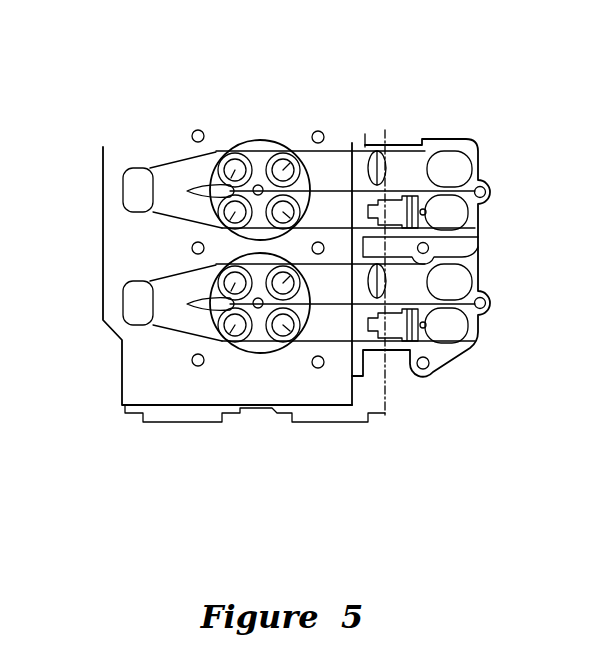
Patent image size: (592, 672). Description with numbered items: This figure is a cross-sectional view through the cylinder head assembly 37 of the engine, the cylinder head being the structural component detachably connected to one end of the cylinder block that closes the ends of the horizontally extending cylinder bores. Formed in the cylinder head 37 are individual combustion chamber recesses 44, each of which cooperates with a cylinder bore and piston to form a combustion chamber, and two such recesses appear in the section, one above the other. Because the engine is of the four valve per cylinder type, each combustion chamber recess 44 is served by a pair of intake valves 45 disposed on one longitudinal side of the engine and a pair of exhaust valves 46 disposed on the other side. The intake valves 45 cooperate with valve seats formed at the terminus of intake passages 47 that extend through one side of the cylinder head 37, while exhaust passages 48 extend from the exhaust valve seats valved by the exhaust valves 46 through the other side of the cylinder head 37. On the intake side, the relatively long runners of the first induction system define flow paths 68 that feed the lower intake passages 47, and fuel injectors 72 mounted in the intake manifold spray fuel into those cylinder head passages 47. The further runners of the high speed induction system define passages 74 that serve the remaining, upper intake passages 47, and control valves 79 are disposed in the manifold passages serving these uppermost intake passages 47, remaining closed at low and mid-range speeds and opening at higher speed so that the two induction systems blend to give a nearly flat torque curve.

The cylinder head assembly 37 is at (98, 257).
The combustion chamber recess 44 is at (263, 150).
The intake valve 45 is at (285, 168).
The exhaust valve 46 is at (240, 165).
The intake passage 47 is at (338, 175).
The exhaust passage 48 is at (172, 175).
The flow path 68 is at (452, 228).
The fuel injector 72 is at (427, 214).
The passage 74 is at (453, 164).
The control valve 79 is at (394, 150).